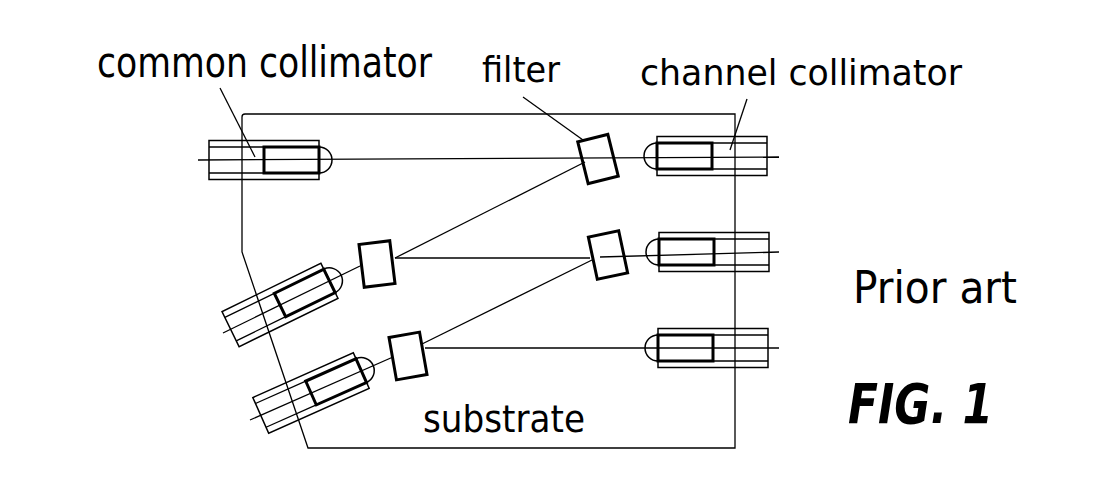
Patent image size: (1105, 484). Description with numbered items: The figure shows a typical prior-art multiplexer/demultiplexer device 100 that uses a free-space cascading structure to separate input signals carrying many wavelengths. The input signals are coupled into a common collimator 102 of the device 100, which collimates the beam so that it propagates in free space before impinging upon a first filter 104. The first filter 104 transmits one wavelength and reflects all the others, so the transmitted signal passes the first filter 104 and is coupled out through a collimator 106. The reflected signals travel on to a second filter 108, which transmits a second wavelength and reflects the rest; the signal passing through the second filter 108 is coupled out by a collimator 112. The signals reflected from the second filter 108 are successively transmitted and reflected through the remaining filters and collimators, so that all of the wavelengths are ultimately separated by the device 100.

The multiplexer/demultiplexer device 100 is at (488, 88).
The common collimator 102 is at (237, 162).
The first filter 104 is at (488, 269).
The collimator 106 is at (734, 154).
The second filter 108 is at (381, 250).
The collimator 112 is at (265, 302).